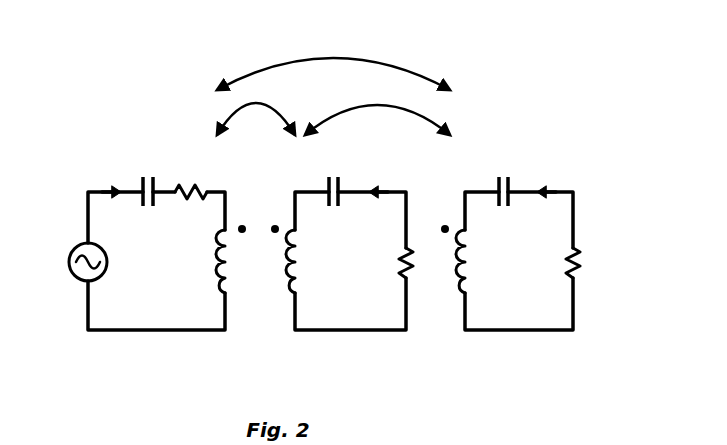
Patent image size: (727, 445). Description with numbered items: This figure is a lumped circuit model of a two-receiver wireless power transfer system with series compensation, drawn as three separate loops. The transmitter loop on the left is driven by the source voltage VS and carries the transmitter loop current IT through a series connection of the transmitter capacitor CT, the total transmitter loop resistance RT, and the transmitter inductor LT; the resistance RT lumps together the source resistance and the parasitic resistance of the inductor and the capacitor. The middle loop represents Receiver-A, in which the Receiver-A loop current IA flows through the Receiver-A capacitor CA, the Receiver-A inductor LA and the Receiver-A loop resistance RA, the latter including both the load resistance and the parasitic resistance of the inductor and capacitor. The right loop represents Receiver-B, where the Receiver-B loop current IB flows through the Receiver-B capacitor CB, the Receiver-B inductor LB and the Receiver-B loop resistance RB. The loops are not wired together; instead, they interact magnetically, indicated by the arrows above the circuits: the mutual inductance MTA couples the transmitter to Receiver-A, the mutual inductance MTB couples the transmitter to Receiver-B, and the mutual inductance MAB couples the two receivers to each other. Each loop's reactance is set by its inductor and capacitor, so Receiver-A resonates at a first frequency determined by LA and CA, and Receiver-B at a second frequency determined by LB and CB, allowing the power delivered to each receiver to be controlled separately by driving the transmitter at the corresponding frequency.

The source voltage VS is at (76, 262).
The transmitter loop current IT is at (111, 177).
The transmitter capacitor CT is at (148, 178).
The total transmitter loop resistance RT is at (191, 178).
The transmitter inductor LT is at (218, 259).
The Receiver-A capacitor CA is at (333, 181).
The Receiver-A loop current IA is at (378, 177).
The Receiver-A inductor LA is at (299, 259).
The Receiver-A loop resistance RA is at (390, 263).
The Receiver-B capacitor CB is at (503, 181).
The Receiver-B loop current IB is at (546, 177).
The Receiver-B inductor LB is at (469, 259).
The Receiver-B loop resistance RB is at (557, 263).
The mutual inductance between transmitter and Receiver-B MTB is at (333, 62).
The mutual inductance between transmitter and Receiver-A MTA is at (256, 108).
The mutual inductance between Receiver-A and Receiver-B MAB is at (377, 109).